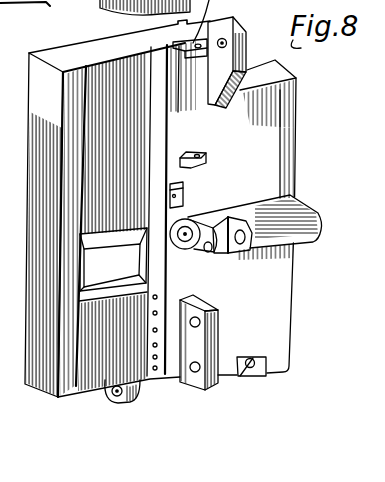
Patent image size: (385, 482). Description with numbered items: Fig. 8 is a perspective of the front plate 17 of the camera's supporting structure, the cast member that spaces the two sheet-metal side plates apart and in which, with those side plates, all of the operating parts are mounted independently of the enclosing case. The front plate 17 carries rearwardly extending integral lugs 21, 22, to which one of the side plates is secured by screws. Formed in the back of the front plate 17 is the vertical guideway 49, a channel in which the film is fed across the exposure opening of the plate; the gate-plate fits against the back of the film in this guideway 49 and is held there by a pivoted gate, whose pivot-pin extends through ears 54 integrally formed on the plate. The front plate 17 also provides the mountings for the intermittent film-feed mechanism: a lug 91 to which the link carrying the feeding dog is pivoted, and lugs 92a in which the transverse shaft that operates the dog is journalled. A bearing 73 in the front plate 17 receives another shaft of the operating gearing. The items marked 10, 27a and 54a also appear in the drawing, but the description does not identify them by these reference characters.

The slide body 10 is at (83, 290).
The front plate 17 is at (295, 115).
The lug 21 is at (256, 3).
The lug 22 is at (220, 330).
The guide rail 27a is at (5, 2).
The vertical guideway 49 is at (168, 130).
The latch block 54a is at (213, 164).
The ears 54 is at (207, 162).
The bearing 73 is at (188, 217).
The lug 91 is at (184, 195).
The lugs 92a is at (313, 212).